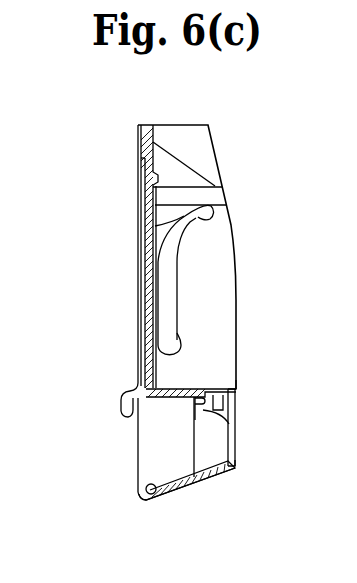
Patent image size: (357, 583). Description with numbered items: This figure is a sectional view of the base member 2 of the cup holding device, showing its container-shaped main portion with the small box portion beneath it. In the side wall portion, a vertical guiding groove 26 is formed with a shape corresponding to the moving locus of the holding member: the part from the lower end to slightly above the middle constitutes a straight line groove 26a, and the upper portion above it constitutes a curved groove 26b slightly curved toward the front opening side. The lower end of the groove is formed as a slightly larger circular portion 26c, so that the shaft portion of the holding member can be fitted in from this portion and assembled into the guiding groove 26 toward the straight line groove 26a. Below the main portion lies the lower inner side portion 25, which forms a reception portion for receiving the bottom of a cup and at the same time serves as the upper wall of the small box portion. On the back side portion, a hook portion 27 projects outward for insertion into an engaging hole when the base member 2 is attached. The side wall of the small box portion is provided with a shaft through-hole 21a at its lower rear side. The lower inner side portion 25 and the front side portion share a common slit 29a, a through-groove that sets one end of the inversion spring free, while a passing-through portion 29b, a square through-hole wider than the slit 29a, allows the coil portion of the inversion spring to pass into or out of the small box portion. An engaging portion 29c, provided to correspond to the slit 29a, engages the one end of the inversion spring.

The base member 2 is at (229, 179).
The shaft through-hole 21a is at (147, 490).
The lower inner side portion 25 is at (180, 389).
The guiding groove 26 is at (62, 226).
The straight line groove 26a is at (163, 291).
The curved groove 26b is at (146, 223).
The circular portion 26c is at (164, 339).
The hook portion 27 is at (121, 407).
The slit 29a is at (230, 388).
The passing-through portion 29b is at (234, 452).
The engaging portion 29c is at (226, 426).